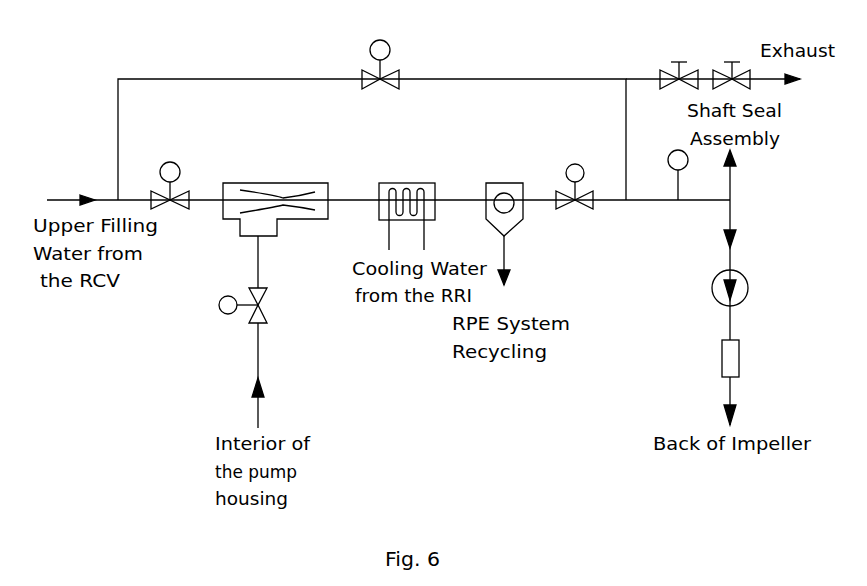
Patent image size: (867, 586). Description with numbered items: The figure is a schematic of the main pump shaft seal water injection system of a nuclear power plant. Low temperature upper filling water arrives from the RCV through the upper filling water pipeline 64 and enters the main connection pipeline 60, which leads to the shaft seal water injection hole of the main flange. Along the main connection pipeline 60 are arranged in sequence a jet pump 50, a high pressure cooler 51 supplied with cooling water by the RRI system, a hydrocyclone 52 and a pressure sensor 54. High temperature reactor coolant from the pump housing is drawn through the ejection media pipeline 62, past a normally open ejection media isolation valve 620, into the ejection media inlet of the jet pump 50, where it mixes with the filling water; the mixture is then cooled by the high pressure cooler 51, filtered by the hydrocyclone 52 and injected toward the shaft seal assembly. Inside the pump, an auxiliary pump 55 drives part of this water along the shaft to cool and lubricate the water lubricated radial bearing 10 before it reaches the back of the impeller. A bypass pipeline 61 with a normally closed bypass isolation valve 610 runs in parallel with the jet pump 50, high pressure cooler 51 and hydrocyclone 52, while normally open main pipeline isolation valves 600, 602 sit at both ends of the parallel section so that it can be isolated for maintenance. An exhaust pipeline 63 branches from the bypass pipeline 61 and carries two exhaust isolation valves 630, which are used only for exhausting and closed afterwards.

The water lubricated radial bearing 10 is at (722, 362).
The jet pump 50 is at (283, 183).
The high pressure cooler 51 is at (410, 183).
The hydrocyclone 52 is at (505, 183).
The pressure sensor 54 is at (670, 152).
The auxiliary pump 55 is at (714, 285).
The main connection pipeline 60 is at (200, 200).
The bypass pipeline 61 is at (250, 79).
The ejection media pipeline 62 is at (258, 365).
The exhaust pipeline 63 is at (642, 79).
The upper filling water pipeline 64 is at (62, 200).
The main pipeline isolation valve 600 is at (163, 162).
The main pipeline isolation valve 602 is at (569, 165).
The bypass isolation valve 610 is at (363, 70).
The ejection media isolation valve 620 is at (264, 312).
The exhaust isolation valves 630 is at (710, 78).